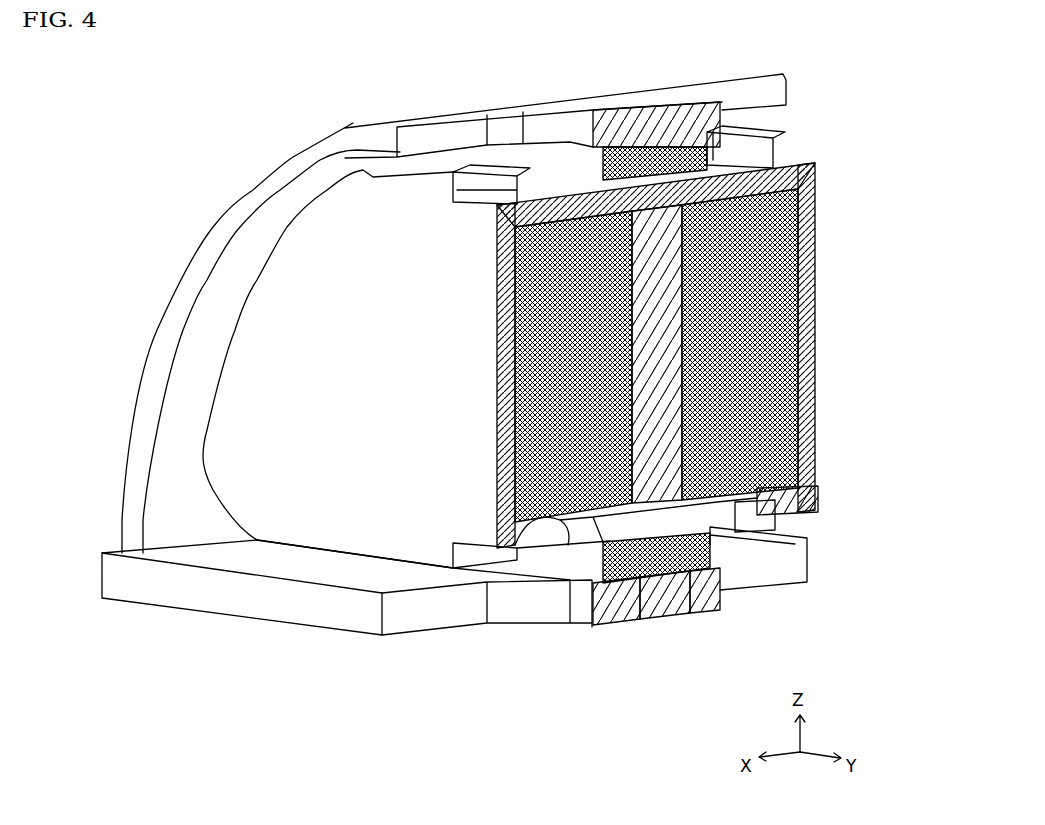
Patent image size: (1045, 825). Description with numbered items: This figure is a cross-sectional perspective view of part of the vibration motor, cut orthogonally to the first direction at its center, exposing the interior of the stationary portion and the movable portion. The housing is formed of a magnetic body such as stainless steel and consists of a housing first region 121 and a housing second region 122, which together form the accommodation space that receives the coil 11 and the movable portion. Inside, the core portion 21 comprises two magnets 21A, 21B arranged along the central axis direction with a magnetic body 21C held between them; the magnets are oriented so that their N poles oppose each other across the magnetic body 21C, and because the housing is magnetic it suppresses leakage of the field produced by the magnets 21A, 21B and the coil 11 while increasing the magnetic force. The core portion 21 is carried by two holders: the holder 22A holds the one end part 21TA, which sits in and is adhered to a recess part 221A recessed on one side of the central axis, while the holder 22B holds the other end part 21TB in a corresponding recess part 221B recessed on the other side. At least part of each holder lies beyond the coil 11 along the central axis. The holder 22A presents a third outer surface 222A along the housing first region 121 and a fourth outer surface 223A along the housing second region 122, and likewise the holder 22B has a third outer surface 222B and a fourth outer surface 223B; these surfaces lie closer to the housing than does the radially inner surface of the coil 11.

The coil 11 is at (567, 167).
The housing first region 121 is at (190, 592).
The housing second region 122 is at (188, 286).
The core portion 21 is at (679, 459).
The magnet 21A is at (655, 503).
The magnet 21B is at (697, 482).
The magnetic body 21C is at (673, 500).
The one end part 21TA is at (545, 532).
The other end part 21TB is at (793, 488).
The holder 22A is at (373, 530).
The holder 22B is at (814, 398).
The recess part 221A is at (567, 547).
The recess part 221B is at (792, 538).
The third outer surface 222A is at (303, 548).
The third outer surface 222B is at (778, 512).
The fourth outer surface 223A is at (458, 170).
The fourth outer surface 223B is at (744, 130).